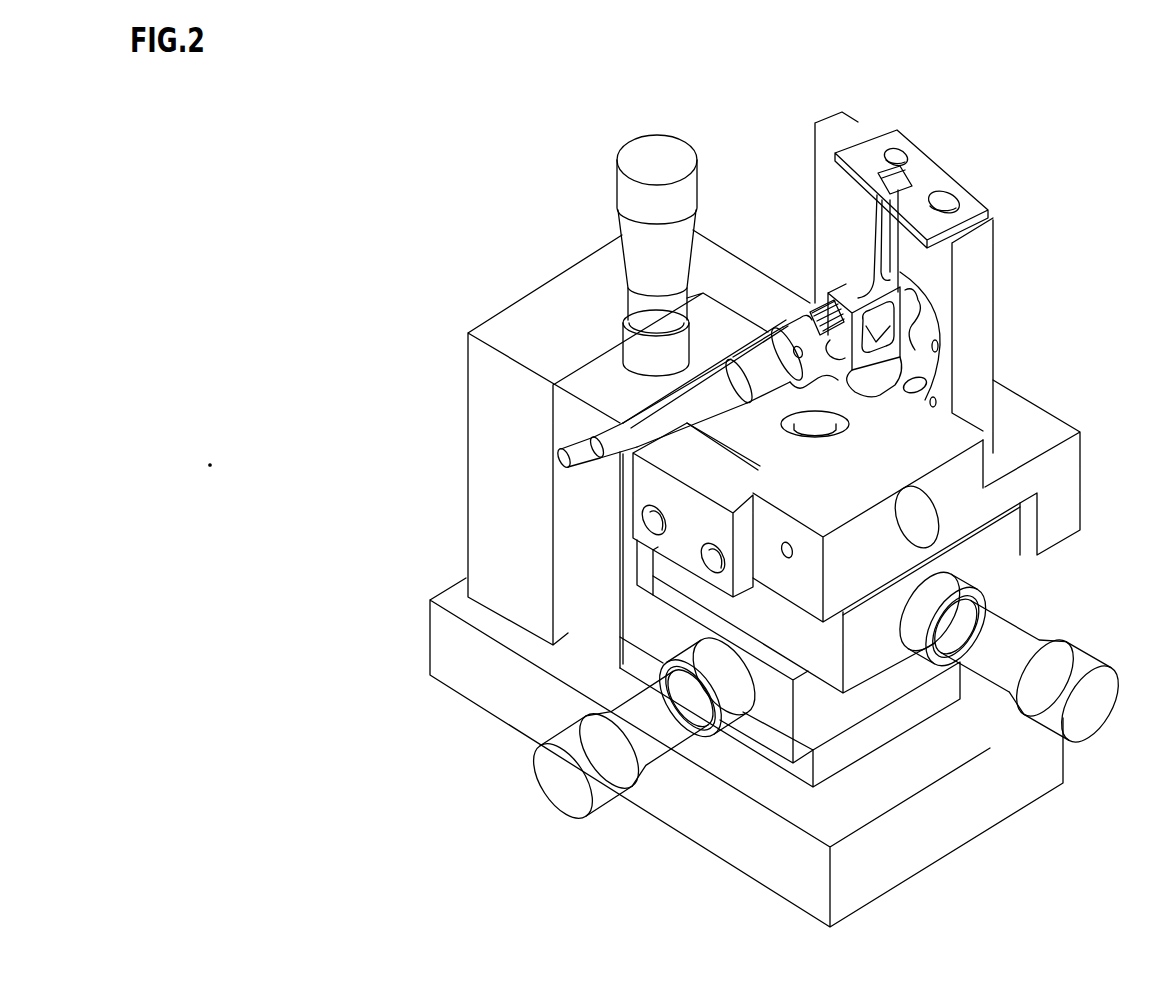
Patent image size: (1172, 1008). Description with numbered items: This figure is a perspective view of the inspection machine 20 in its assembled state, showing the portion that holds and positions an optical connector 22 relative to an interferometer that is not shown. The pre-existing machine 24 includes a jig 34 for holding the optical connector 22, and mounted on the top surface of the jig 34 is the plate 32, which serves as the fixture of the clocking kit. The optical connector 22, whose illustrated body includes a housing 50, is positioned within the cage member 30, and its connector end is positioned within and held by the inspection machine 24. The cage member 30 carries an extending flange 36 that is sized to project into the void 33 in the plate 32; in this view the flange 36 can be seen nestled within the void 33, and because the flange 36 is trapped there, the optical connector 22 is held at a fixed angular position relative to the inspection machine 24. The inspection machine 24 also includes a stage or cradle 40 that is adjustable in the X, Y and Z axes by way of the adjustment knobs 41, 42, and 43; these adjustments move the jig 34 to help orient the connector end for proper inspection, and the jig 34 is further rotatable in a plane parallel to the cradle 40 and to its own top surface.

The inspection machine 20 is at (552, 192).
The optical connector 22 is at (783, 330).
The machine 24 is at (1010, 160).
The cage member 30 is at (848, 283).
The plate 32 is at (930, 165).
The void 33 is at (886, 178).
The jig 34 is at (993, 297).
The extending flange 36 is at (875, 217).
The cradle 40 is at (1047, 412).
The adjustment knob 41 is at (1085, 655).
The adjustment knob 42 is at (598, 803).
The adjustment knob 43 is at (660, 138).
The housing 50 is at (815, 375).